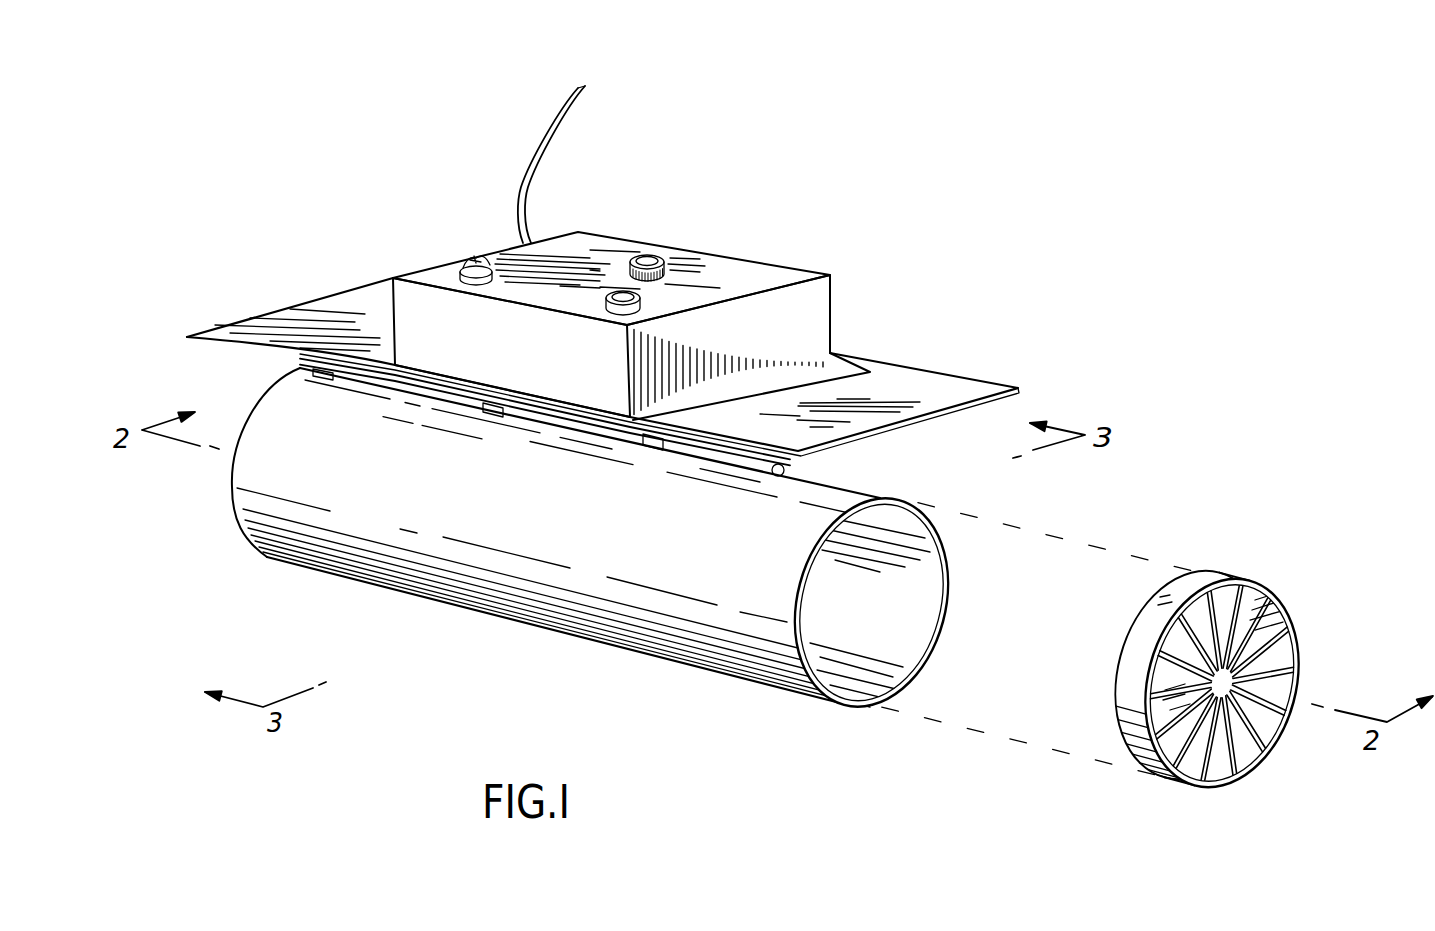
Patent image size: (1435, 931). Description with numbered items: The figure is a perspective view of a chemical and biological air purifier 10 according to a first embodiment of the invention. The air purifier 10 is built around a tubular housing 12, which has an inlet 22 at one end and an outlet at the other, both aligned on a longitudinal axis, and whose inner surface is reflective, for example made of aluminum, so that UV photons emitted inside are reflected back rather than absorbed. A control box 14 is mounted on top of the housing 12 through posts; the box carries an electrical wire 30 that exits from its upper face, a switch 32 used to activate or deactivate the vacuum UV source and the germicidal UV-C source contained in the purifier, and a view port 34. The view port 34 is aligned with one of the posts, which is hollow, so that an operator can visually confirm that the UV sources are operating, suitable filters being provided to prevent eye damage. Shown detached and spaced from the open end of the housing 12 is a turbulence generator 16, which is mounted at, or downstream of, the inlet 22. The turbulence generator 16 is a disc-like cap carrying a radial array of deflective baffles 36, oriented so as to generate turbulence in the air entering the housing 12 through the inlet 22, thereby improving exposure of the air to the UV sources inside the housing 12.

The chemical and biological air purifier 10 is at (210, 293).
The housing 12 is at (653, 613).
The control box 14 is at (838, 300).
The turbulence generator 16 is at (1200, 570).
The inlet 22 is at (910, 596).
The electrical wire 30 is at (545, 122).
The switch 32 is at (610, 290).
The view port 34 is at (650, 258).
The deflective baffles 36 is at (1293, 627).